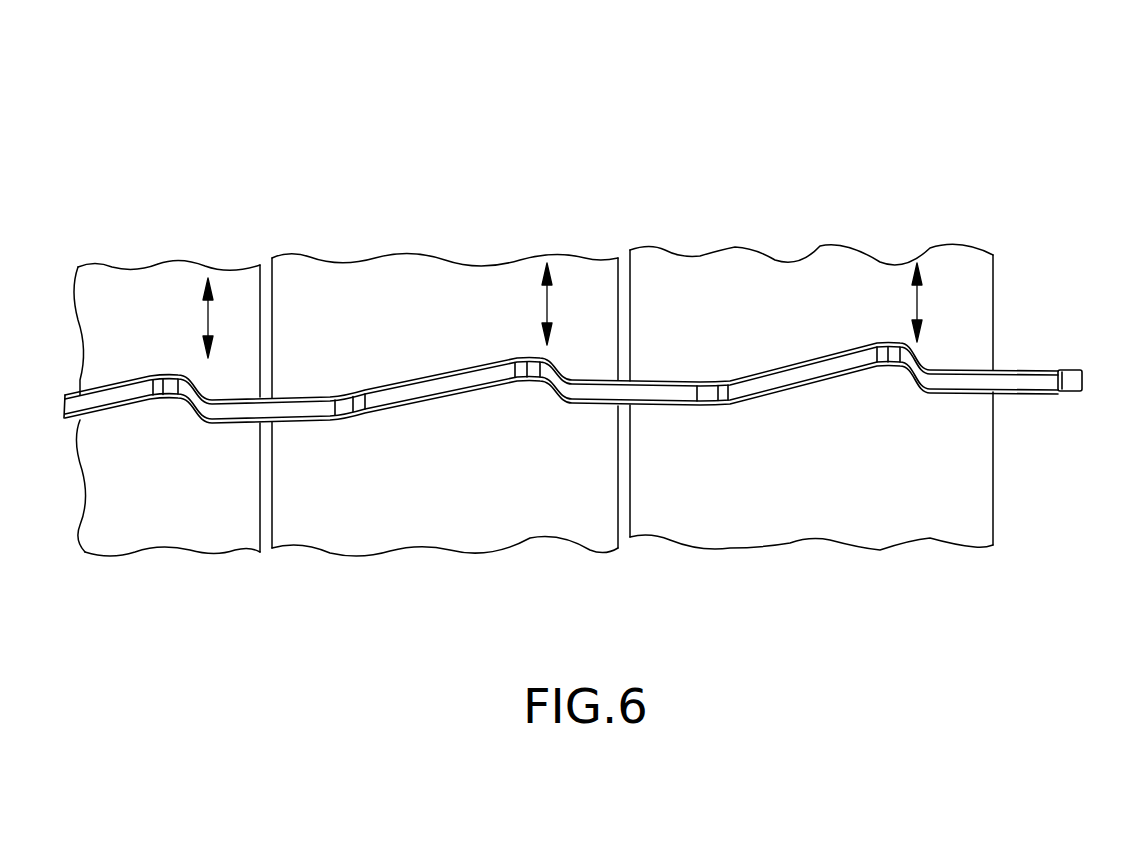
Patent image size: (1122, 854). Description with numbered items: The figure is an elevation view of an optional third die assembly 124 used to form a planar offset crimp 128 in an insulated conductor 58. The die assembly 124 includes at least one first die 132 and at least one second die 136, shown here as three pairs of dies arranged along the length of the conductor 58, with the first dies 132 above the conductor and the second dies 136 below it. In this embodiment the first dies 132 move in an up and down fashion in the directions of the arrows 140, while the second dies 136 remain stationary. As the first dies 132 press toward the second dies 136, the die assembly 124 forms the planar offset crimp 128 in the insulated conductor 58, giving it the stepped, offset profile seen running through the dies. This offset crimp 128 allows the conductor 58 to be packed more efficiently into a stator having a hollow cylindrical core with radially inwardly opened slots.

The third die assembly 124 is at (677, 117).
The first die 132 is at (113, 290).
The second die 136 is at (145, 525).
The arrows 140 is at (217, 310).
The planar offset crimp 128 is at (874, 378).
The insulated conductor 58 is at (1025, 372).